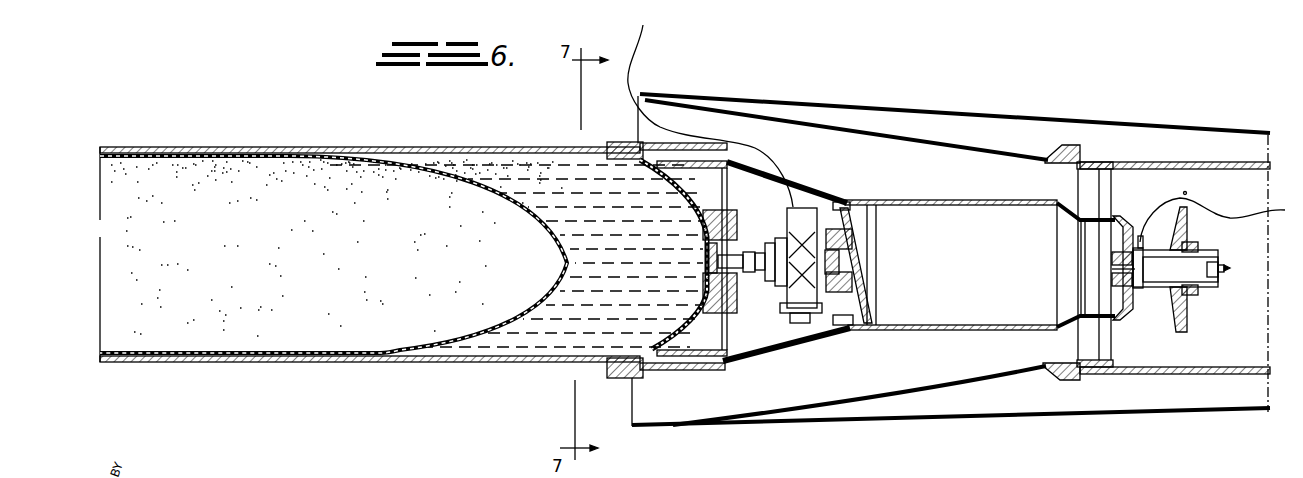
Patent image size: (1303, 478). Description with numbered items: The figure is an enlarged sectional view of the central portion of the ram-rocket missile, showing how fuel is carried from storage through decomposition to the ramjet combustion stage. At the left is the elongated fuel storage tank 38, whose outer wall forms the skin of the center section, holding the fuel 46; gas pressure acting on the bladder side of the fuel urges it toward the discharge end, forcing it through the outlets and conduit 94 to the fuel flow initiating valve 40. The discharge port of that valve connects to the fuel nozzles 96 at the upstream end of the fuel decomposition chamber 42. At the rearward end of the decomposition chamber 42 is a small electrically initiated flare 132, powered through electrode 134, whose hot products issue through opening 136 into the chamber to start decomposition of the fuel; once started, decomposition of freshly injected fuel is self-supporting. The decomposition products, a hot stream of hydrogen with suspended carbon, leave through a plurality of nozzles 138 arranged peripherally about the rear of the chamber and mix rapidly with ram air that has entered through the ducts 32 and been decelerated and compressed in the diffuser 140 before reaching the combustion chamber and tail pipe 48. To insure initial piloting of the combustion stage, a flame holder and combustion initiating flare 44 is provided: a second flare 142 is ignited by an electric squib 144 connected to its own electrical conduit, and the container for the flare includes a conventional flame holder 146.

The ducts 32 is at (715, 117).
The fuel storage tank 38 is at (540, 160).
The fuel flow initiating valve 40 is at (782, 303).
The fuel decomposition chamber 42 is at (958, 197).
The flame holder and combustion initiating flare 44 is at (1185, 190).
The fuel 46 is at (550, 358).
The combustion chamber and tail pipe 48 is at (1252, 362).
The conduit 94 is at (740, 256).
The fuel nozzles 96 is at (850, 278).
The electrically initiated flare 132 is at (1137, 290).
The electrode 134 is at (1243, 216).
The opening 136 is at (1112, 262).
The nozzles 138 is at (1122, 218).
The diffuser 140 is at (1080, 160).
The second flare 142 is at (1190, 274).
The electric squib 144 is at (1216, 274).
The flame holder 146 is at (1170, 332).